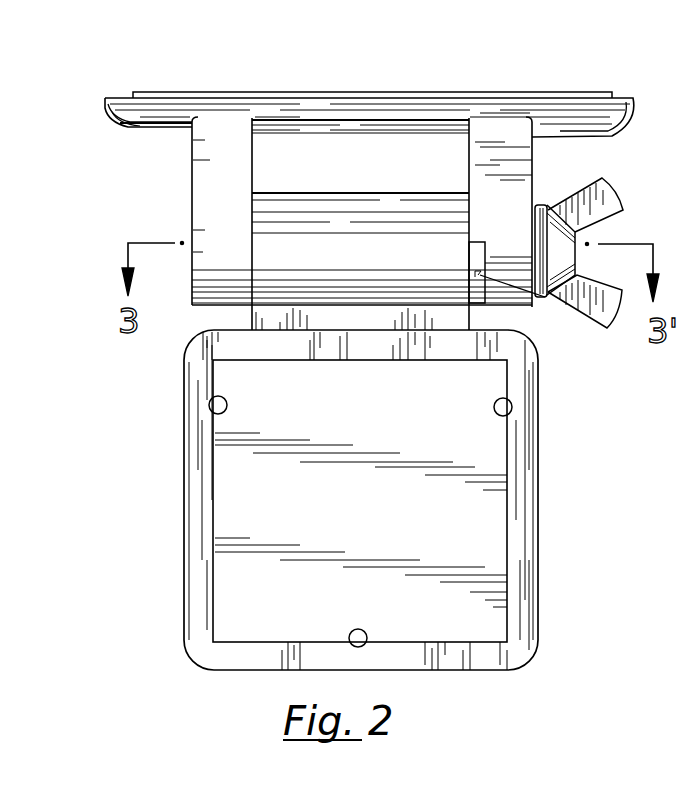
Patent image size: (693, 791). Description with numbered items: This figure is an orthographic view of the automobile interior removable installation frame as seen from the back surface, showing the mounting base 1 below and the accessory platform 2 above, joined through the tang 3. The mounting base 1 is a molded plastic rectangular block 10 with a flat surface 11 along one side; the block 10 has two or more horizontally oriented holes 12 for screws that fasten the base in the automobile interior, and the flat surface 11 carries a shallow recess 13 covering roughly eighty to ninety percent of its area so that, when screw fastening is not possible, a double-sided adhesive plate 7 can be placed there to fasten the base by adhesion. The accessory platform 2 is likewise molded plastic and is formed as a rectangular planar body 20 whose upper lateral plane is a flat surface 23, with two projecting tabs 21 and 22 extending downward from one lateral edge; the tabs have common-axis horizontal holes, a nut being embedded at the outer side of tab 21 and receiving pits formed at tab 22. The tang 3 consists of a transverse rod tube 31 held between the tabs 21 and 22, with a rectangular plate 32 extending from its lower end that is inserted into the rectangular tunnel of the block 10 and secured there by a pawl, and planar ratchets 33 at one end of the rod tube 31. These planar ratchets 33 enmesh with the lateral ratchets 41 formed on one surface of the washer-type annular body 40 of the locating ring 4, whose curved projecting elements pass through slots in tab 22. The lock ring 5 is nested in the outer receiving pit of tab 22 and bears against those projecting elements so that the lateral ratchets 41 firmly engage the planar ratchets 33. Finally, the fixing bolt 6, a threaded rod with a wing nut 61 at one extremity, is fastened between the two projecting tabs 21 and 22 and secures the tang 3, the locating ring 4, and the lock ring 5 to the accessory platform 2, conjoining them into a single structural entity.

The mounting base 1 is at (178, 552).
The rectangular block 10 is at (178, 588).
The flat surface 11 is at (197, 445).
The horizontally oriented holes 12 is at (209, 404).
The shallow recess 13 is at (230, 490).
The accessory platform 2 is at (113, 124).
The rectangular planar body 20 is at (141, 116).
The projecting tab 21 is at (207, 205).
The projecting tab 22 is at (520, 138).
The flat surface 23 is at (125, 98).
The tang 3 is at (290, 191).
The transverse rod tube 31 is at (342, 241).
The rectangular plate 32 is at (262, 318).
The planar ratchets 33 is at (468, 226).
The locating ring 4 is at (483, 310).
The washer-type annular body 40 is at (546, 298).
The lateral ratchets 41 is at (467, 257).
The lock ring 5 is at (550, 201).
The fixing bolt 6 is at (628, 187).
The wing nut 61 is at (603, 217).
The double-sided adhesive plate 7 is at (176, 88).